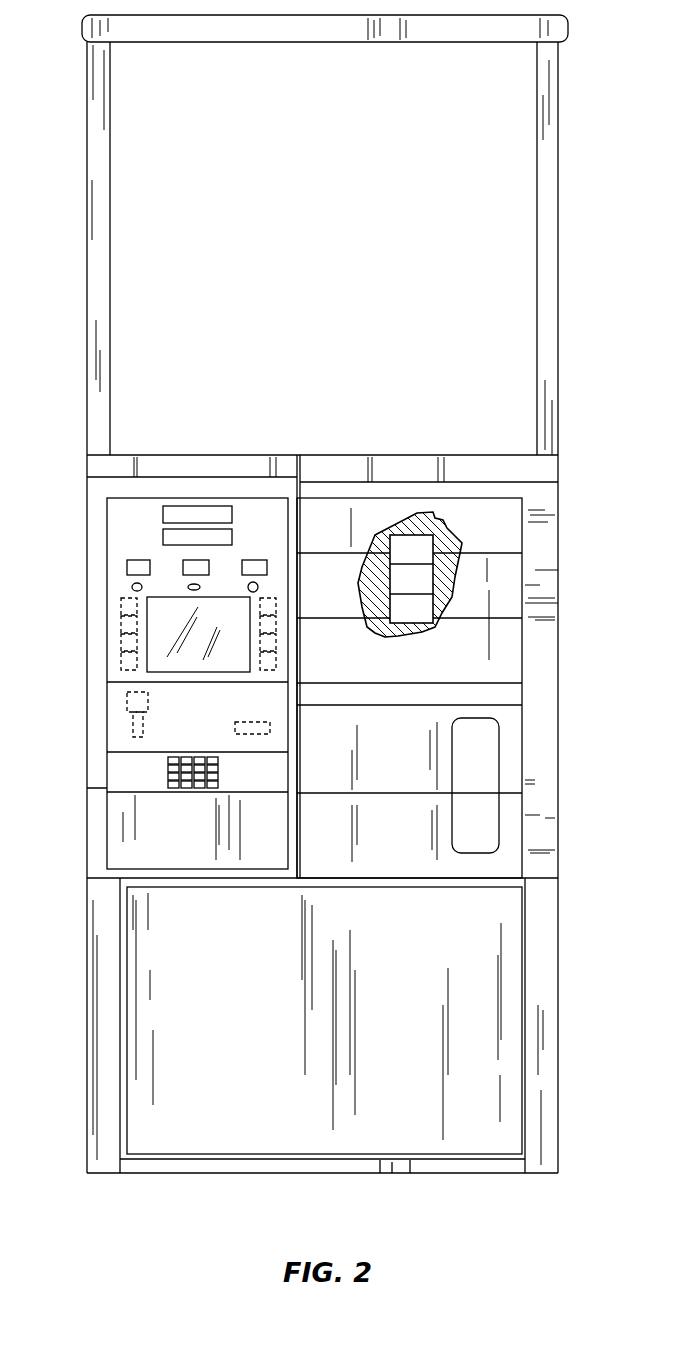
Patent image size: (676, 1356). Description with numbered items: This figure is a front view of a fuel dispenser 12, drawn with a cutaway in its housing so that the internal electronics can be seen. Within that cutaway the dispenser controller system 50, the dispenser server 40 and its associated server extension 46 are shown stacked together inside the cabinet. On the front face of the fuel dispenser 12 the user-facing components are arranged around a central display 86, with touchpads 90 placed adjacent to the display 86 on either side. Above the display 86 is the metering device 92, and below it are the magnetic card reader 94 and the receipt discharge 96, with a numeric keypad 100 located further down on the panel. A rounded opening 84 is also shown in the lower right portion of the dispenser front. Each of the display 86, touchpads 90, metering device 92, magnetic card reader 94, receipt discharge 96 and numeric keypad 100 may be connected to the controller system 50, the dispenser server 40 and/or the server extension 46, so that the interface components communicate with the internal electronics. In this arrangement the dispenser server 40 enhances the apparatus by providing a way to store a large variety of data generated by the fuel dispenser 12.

The fuel dispenser 12 is at (460, 450).
The metering device 92 is at (175, 505).
The touchpads 90 is at (265, 600).
The display 86 is at (190, 655).
The magnetic card reader 94 is at (134, 714).
The receipt discharge 96 is at (246, 730).
The numeric keypad 100 is at (168, 775).
The dispensing opening 84 is at (480, 784).
The dispenser controller system 50 is at (425, 560).
The dispenser server 40 is at (425, 590).
The server extension 46 is at (425, 620).